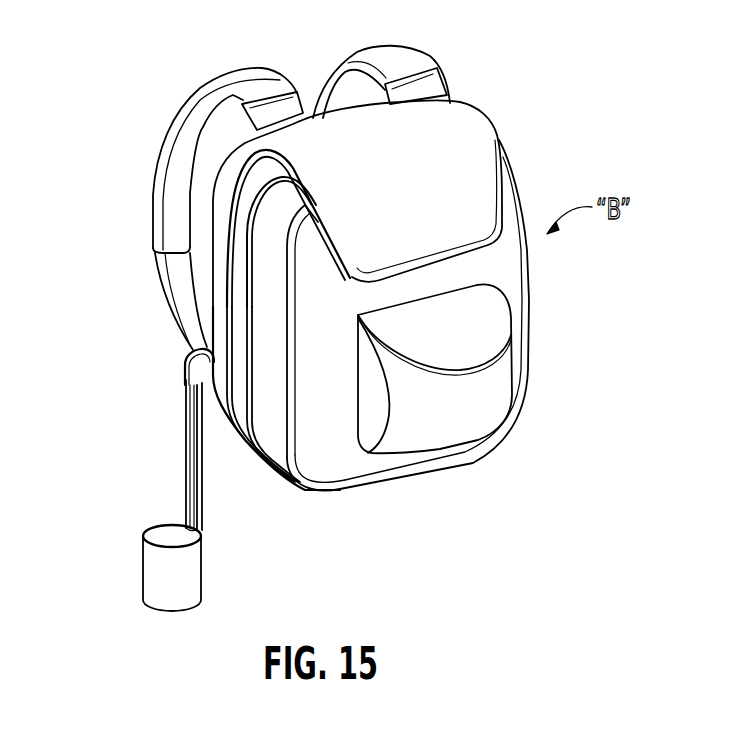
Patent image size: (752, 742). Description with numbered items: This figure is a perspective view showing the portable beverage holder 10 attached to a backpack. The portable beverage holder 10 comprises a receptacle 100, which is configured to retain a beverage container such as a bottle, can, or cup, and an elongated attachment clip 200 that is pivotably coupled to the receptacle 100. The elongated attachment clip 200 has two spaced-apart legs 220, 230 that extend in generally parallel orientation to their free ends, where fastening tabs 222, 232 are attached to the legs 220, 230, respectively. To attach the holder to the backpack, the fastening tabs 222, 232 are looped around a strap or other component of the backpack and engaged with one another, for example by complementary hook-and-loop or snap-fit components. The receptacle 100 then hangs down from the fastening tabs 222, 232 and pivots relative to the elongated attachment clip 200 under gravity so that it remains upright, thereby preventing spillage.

The portable beverage holder 10 is at (123, 529).
The receptacle 100 is at (148, 580).
The elongated attachment clip 200 is at (186, 453).
The leg 220 is at (191, 500).
The fastening tab 222 is at (196, 348).
The leg 230 is at (203, 497).
The fastening tab 232 is at (199, 393).